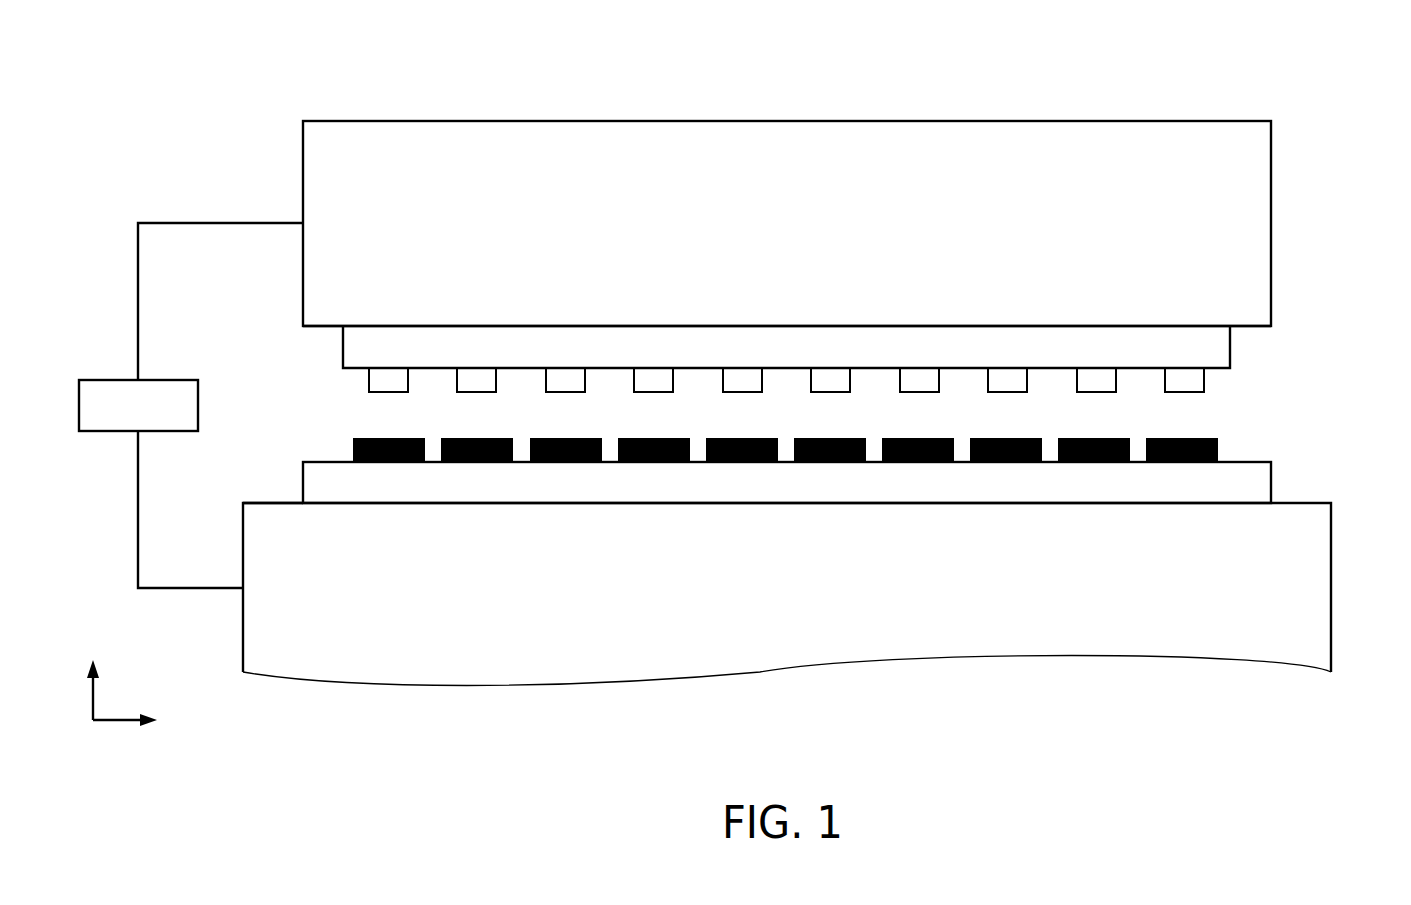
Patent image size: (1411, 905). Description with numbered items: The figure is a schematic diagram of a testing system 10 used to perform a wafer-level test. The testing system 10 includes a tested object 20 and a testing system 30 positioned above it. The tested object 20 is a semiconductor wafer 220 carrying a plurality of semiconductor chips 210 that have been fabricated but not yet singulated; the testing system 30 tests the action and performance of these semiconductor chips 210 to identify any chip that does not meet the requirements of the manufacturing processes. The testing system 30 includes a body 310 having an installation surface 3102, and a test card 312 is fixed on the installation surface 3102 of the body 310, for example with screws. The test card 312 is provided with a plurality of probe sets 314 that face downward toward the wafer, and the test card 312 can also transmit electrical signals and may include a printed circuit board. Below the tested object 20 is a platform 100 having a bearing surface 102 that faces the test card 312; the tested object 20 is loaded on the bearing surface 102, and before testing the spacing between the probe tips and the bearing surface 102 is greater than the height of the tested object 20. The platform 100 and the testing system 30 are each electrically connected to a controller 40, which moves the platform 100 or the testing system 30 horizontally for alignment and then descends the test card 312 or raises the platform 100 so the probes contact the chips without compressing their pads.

The testing system 10 is at (800, 33).
The testing system 30 is at (791, 250).
The body 310 is at (808, 240).
The installation surface 3102 is at (317, 327).
The test card 312 is at (1218, 346).
The probe sets 314 is at (382, 391).
The tested object 20 is at (852, 468).
The semiconductor chips 210 is at (1218, 447).
The semiconductor wafer 220 is at (1258, 482).
The platform 100 is at (808, 603).
The bearing surface 102 is at (282, 502).
The controller 40 is at (100, 378).